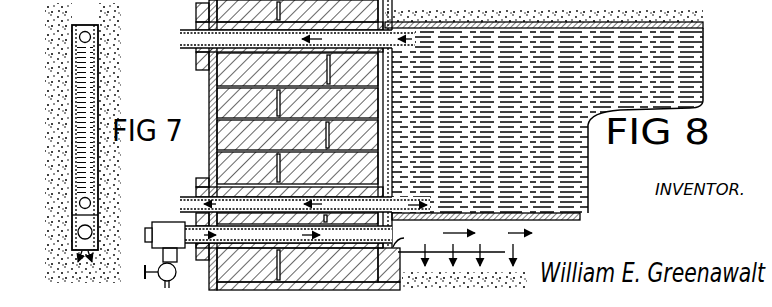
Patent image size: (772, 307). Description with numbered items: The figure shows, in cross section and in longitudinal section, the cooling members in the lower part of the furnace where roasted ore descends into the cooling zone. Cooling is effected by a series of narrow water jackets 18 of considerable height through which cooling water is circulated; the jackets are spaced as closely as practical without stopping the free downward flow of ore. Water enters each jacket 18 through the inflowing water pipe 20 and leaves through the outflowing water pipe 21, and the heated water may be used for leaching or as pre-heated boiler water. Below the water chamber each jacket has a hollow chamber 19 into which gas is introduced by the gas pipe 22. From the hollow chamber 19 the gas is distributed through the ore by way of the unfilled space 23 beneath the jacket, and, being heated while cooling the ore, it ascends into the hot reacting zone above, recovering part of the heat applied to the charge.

In FIG. 7, the water jacket 18 is at (74, 82).
In FIG. 8, the water jacket 18 is at (703, 25).
In FIG. 7, the hollow chamber 19 is at (80, 247).
In FIG. 8, the hollow chamber 19 is at (338, 255).
In FIG. 7, the inflowing water pipe 20 is at (79, 203).
In FIG. 8, the inflowing water pipe 20 is at (181, 205).
In FIG. 7, the outflowing water pipe 21 is at (79, 37).
In FIG. 8, the outflowing water pipe 21 is at (181, 38).
In FIG. 7, the gas pipe 22 is at (78, 231).
In FIG. 8, the gas pipe 22 is at (393, 235).
In FIG. 7, the unfilled space 23 is at (82, 265).
In FIG. 8, the unfilled space 23 is at (464, 270).